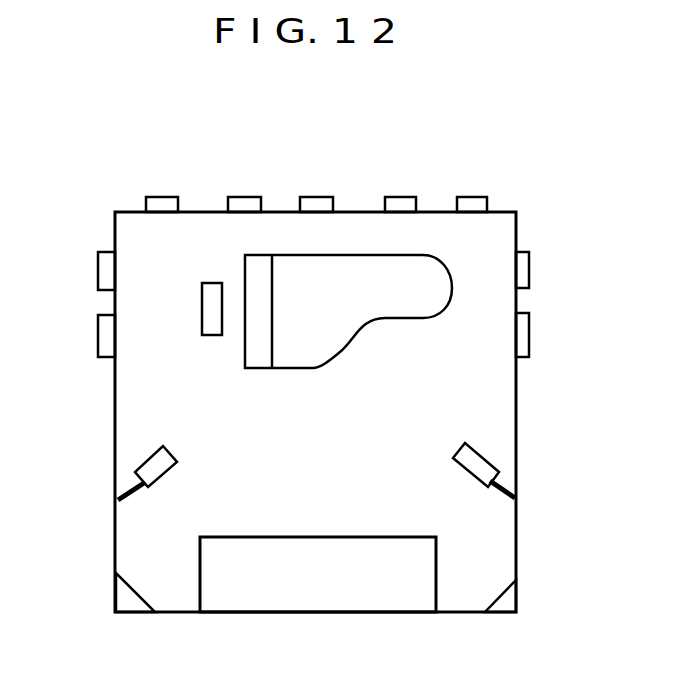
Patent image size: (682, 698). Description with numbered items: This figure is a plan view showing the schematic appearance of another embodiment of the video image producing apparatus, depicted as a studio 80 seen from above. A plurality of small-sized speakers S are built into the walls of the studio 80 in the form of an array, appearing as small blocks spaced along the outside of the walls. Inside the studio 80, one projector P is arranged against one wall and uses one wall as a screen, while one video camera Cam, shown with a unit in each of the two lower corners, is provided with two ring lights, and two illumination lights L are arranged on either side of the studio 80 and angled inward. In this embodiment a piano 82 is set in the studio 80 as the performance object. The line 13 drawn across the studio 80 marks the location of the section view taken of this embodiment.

The studio 80 is at (128, 184).
The speakers S is at (486, 198).
The piano 82 is at (383, 307).
The line 13— 13 is at (105, 417).
The illumination lights L is at (142, 470).
The projector P is at (436, 577).
The video camera Cam is at (115, 602).